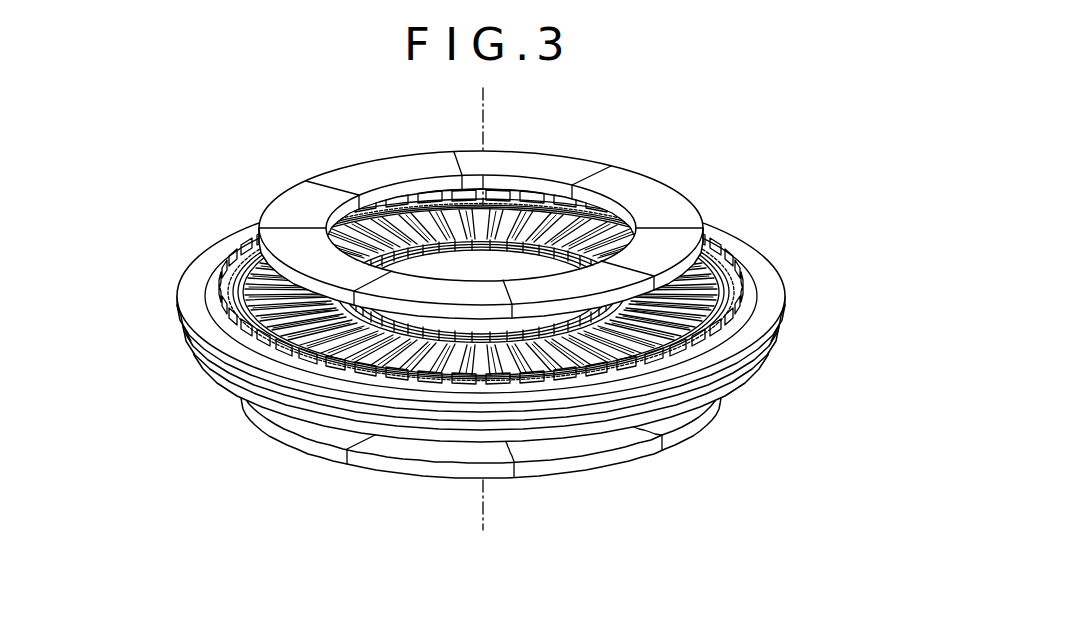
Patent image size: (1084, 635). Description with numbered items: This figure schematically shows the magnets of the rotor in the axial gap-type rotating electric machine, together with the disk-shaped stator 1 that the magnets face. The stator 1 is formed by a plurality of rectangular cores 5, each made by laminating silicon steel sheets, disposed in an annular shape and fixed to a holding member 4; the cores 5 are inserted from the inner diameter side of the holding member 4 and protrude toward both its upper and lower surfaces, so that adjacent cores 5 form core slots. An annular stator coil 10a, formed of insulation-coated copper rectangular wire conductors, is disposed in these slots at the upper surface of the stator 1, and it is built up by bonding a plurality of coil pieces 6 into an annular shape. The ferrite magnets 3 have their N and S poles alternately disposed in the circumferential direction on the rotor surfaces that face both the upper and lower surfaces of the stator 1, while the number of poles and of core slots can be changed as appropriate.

The stator 1 is at (730, 241).
The magnet 3 is at (651, 190).
The holding member 4 is at (190, 277).
The core 5 is at (449, 380).
The coil piece 6 is at (753, 281).
The stator coil 10a is at (757, 303).